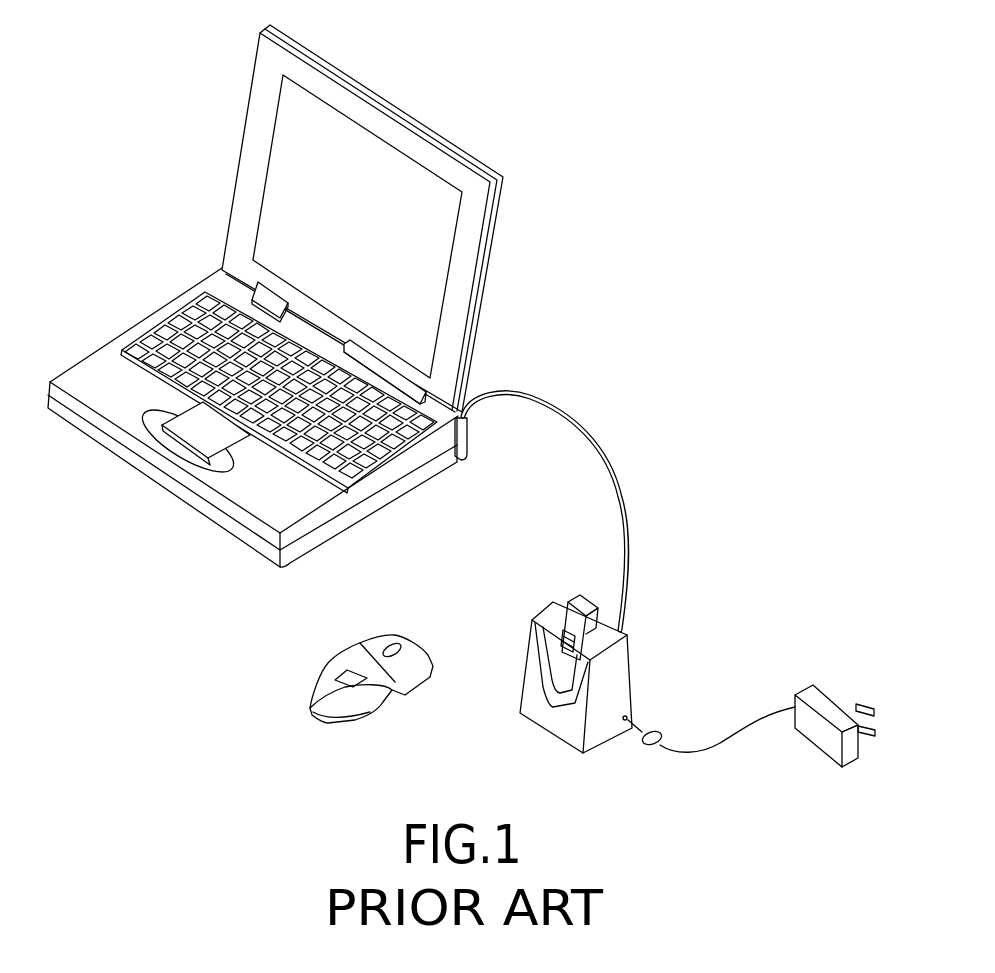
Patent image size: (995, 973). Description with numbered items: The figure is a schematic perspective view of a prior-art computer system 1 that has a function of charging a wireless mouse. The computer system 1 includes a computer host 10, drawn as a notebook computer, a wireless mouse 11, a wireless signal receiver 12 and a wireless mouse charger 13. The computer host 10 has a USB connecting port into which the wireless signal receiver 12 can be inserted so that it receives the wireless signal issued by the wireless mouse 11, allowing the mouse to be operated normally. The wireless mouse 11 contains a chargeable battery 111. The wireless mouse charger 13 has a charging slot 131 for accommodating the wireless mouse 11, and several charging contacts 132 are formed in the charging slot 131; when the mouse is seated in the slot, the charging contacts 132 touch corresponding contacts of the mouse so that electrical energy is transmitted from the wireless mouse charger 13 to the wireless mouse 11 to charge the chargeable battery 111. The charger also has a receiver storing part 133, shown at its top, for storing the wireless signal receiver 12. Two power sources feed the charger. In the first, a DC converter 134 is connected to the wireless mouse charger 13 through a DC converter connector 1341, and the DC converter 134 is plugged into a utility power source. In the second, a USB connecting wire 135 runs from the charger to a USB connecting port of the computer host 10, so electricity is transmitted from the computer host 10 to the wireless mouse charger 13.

The computer system 1 is at (730, 60).
The computer host 10 is at (455, 136).
The wireless mouse 11 is at (345, 646).
The chargeable battery 111 is at (335, 680).
The wireless signal receiver 12 is at (582, 583).
The wireless mouse charger 13 is at (618, 683).
The charging slot 131 is at (540, 640).
The charging contacts 132 is at (575, 680).
The receiver storing part 133 is at (566, 638).
The DC converter 134 is at (818, 735).
The DC converter connector 1341 is at (655, 730).
The USB connecting wire 135 is at (468, 386).